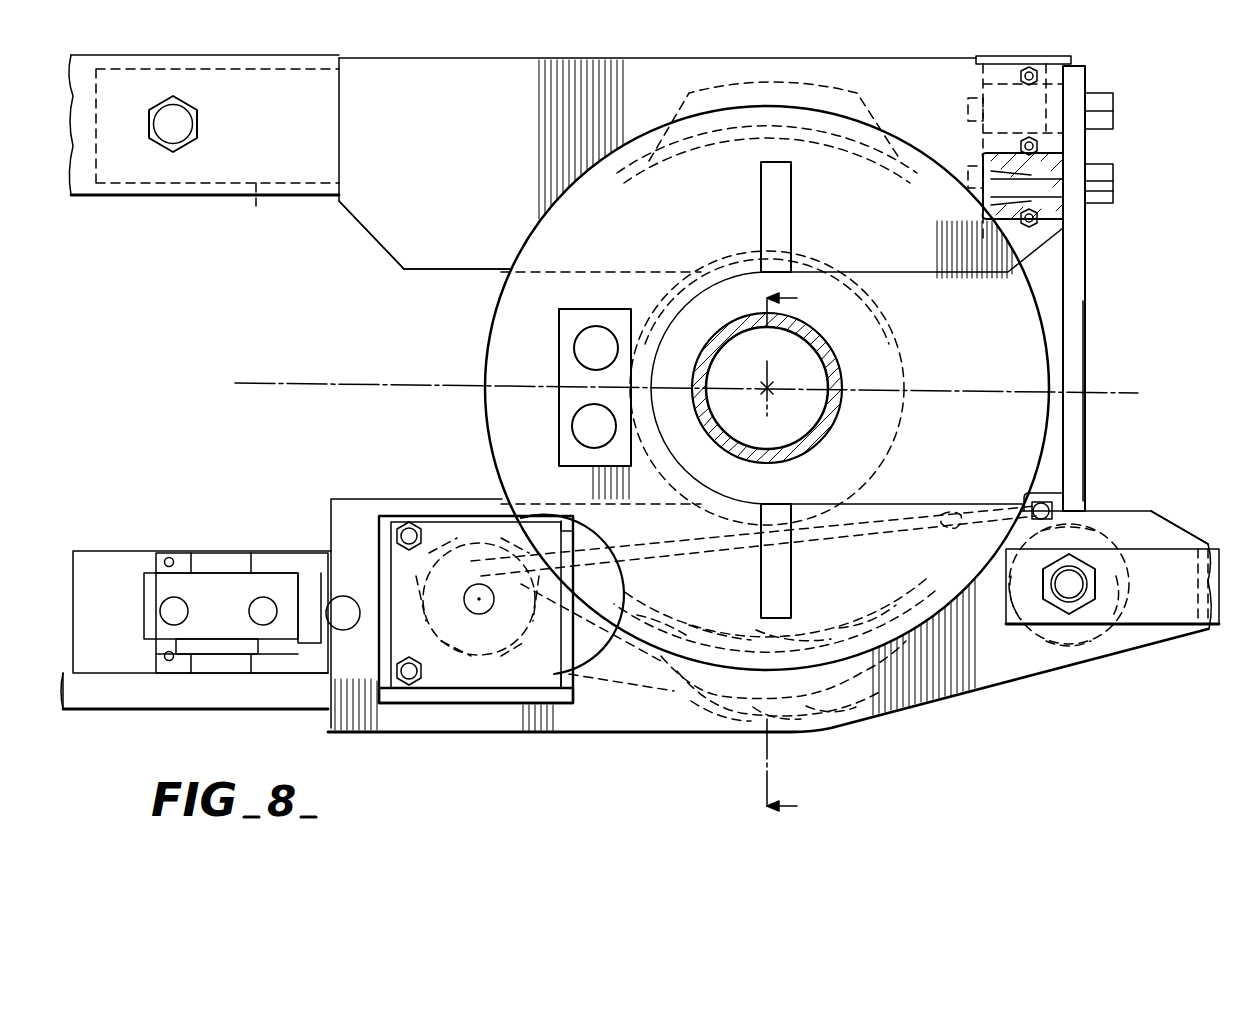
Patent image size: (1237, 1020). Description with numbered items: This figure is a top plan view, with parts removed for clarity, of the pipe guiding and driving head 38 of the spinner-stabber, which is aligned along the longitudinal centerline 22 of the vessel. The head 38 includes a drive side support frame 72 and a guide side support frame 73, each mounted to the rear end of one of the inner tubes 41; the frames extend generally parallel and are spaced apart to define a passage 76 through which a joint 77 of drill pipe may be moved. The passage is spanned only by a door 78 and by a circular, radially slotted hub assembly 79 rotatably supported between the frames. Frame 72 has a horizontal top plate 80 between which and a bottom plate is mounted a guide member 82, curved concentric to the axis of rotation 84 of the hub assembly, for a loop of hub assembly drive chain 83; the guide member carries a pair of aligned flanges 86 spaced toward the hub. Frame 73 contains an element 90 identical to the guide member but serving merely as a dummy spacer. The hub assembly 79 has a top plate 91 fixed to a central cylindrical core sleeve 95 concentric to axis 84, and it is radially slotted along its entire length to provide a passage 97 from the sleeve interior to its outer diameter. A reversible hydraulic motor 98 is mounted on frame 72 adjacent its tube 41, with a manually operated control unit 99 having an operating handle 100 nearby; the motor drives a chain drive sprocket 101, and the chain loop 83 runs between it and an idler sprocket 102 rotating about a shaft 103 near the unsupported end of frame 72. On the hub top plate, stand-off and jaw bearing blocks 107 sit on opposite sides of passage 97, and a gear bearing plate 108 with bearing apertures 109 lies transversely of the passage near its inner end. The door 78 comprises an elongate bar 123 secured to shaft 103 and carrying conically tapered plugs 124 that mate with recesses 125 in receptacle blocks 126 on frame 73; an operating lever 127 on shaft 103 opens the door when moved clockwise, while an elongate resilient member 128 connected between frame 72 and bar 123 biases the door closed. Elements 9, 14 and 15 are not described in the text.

The section line 9- 9 is at (794, 556).
The bar 14 is at (258, 210).
The nut 15 is at (185, 123).
The longitudinal centerline 22 is at (270, 382).
The head 38 is at (884, 47).
The inner tube 41 is at (198, 196).
The drive side support frame 72 is at (957, 705).
The guide side support frame 73 is at (485, 68).
The passage 76 is at (353, 306).
The joint of drill pipe 77 is at (836, 349).
The door 78 is at (1086, 293).
The hub assembly 79 is at (483, 408).
The top plate 80 is at (1022, 663).
The guide member 82 is at (870, 672).
The hub assembly drive chain 83 is at (738, 718).
The axis of rotation 84 is at (770, 389).
The flanges 86 is at (718, 632).
The element 90 is at (683, 85).
The top plate 91 is at (497, 297).
The core sleeve 95 is at (845, 270).
The passage 97 is at (990, 346).
The reversible hydraulic motor 98 is at (440, 522).
The control unit 99 is at (215, 585).
The operating handle 100 is at (343, 630).
The chain drive sprocket 101 is at (530, 615).
The idler sprocket 102 is at (1022, 635).
The shaft 103 is at (1080, 583).
The stand-off and jaw bearing blocks 107 is at (792, 215).
The gear bearing plate 108 is at (558, 405).
The bearing apertures 109 is at (573, 350).
The elongate bar 123 is at (1088, 450).
The conically tapered plugs 124 is at (980, 132).
The recesses 125 is at (1055, 62).
The receptacle blocks 126 is at (993, 62).
The operating lever 127 is at (1152, 626).
The elongate resilient member 128 is at (935, 503).